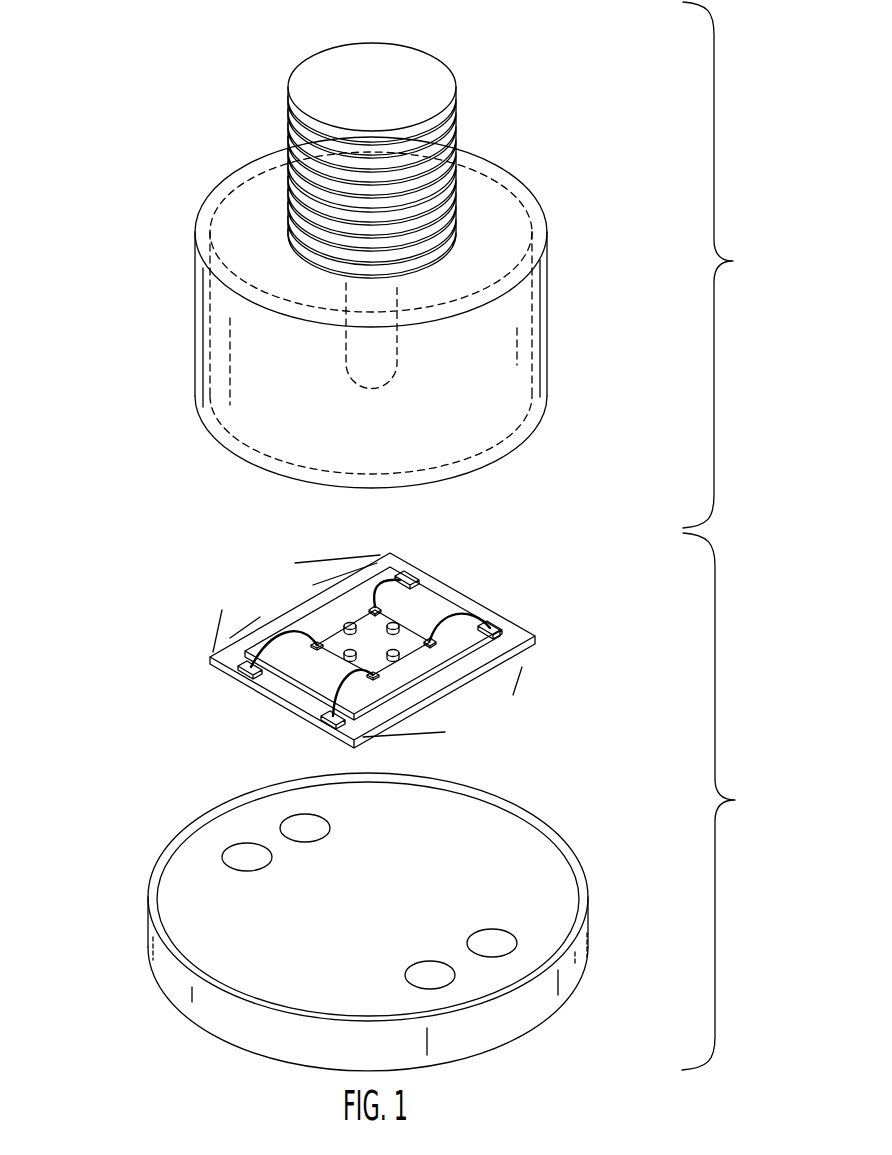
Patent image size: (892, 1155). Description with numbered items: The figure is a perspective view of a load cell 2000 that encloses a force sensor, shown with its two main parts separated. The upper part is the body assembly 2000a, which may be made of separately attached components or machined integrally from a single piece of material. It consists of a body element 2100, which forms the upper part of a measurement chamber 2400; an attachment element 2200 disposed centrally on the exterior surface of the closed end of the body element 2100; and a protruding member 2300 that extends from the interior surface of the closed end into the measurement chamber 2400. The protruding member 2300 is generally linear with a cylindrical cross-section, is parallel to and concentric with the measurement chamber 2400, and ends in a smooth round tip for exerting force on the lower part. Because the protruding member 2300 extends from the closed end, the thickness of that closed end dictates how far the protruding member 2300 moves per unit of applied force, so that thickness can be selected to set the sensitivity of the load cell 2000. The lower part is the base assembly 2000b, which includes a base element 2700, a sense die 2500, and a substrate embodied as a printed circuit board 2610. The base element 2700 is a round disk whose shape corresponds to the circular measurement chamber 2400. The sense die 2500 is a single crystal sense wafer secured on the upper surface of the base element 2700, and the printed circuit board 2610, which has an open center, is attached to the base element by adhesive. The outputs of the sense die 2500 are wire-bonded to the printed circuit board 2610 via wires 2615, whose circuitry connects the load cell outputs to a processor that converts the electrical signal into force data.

The load cell 2000 is at (122, 157).
The body assembly 2000a is at (740, 265).
The base assembly 2000b is at (739, 801).
The body element 2100 is at (549, 256).
The attachment element 2200 is at (428, 84).
The protruding member 2300 is at (387, 347).
The measurement chamber 2400 is at (297, 487).
The sense die 2500 is at (480, 676).
The printed circuit board 2610 is at (210, 661).
The wires 2615 is at (458, 612).
The base element 2700 is at (567, 977).